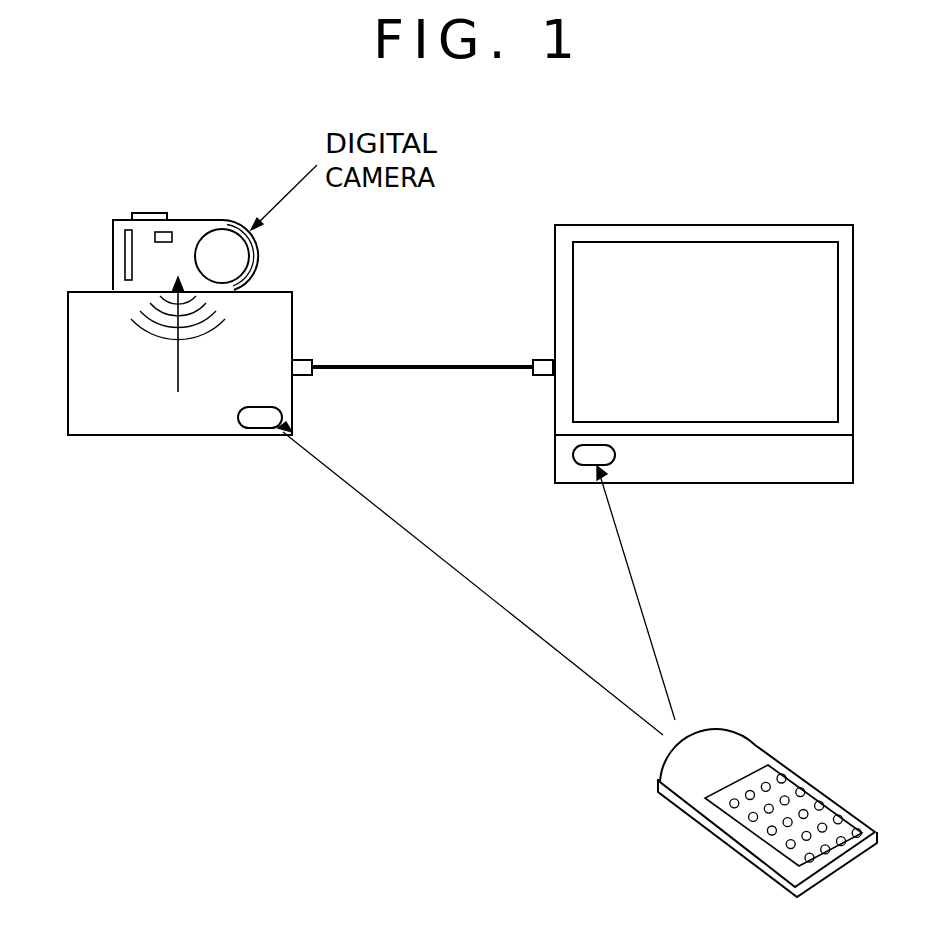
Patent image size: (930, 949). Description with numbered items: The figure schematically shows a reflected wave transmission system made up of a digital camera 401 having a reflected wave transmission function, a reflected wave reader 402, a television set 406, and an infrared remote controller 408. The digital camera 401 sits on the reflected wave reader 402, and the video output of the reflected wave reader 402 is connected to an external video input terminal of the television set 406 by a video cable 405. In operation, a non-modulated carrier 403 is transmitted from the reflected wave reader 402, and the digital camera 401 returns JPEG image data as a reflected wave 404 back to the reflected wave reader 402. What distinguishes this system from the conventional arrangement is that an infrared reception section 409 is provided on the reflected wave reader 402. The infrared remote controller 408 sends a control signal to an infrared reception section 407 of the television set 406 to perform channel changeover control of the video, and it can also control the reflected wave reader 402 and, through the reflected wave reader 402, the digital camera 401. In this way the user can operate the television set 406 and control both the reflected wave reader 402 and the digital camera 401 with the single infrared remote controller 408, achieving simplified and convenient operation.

The digital camera 401 is at (188, 227).
The reflected wave reader 402 is at (110, 437).
The non-modulated carrier 403 is at (180, 372).
The reflected wave 404 is at (203, 322).
The video cable 405 is at (441, 364).
The television set 406 is at (754, 228).
The infrared reception section 407 is at (572, 455).
The infrared remote controller 408 is at (770, 760).
The infrared reception section 409 is at (290, 418).